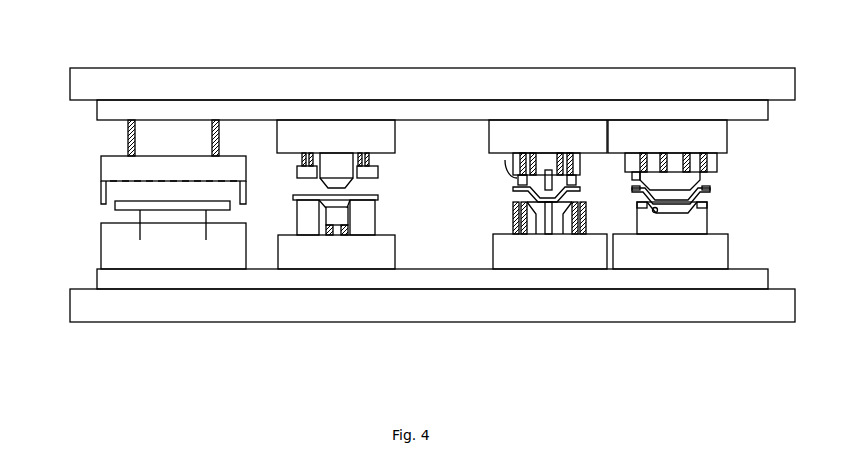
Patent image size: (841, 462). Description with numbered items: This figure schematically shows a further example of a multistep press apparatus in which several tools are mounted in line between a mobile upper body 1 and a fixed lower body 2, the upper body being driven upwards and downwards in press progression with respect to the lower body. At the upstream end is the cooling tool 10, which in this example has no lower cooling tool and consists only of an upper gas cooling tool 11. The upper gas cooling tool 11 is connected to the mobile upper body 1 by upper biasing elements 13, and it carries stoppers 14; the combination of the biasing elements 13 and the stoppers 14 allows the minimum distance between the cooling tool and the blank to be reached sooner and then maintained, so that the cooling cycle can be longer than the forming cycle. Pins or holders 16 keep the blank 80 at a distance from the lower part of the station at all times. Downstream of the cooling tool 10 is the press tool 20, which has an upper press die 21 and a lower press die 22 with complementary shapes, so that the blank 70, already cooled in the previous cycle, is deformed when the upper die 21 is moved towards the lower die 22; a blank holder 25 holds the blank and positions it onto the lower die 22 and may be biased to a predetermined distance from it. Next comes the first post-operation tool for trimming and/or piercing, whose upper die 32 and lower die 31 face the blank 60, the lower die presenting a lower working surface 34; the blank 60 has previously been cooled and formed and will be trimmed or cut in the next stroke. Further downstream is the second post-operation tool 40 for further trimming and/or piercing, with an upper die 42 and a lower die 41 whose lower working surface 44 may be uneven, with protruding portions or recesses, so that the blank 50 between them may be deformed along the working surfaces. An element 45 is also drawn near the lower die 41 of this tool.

The mobile upper body 1 is at (770, 82).
The fixed lower body 2 is at (105, 312).
The cooling tool 10 is at (85, 242).
The upper gas cooling tool 11 is at (101, 160).
The upper biasing elements 13 is at (128, 135).
The stoppers 14 is at (101, 185).
The pins or holders 16 is at (205, 212).
The press tool 20 is at (387, 198).
The upper press die 21 is at (337, 170).
The lower press die 22 is at (337, 220).
The blank holder 25 is at (379, 172).
The lower die 31 is at (520, 155).
The upper die 32 is at (505, 160).
The lower working surface 34 is at (566, 208).
The second post-operation tool 40 is at (750, 172).
The lower die 41 is at (678, 160).
The upper die 42 is at (707, 222).
The lower working surface 44 is at (655, 212).
The stop 45 is at (640, 165).
The blank 50 is at (633, 192).
The blank 60 is at (513, 190).
The blank 70 is at (293, 197).
The blank 80 is at (115, 206).